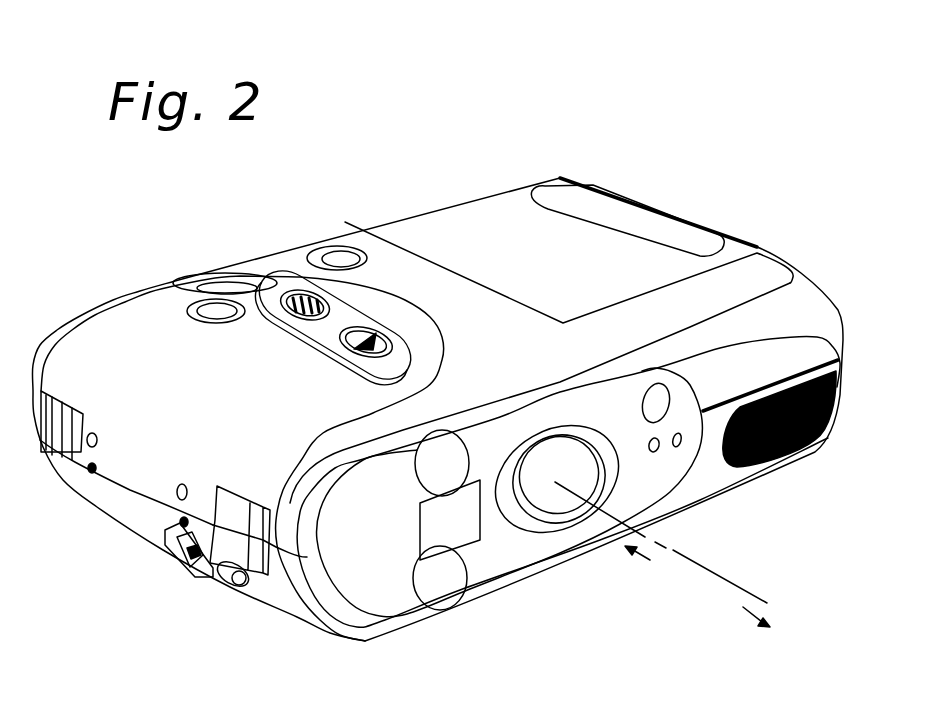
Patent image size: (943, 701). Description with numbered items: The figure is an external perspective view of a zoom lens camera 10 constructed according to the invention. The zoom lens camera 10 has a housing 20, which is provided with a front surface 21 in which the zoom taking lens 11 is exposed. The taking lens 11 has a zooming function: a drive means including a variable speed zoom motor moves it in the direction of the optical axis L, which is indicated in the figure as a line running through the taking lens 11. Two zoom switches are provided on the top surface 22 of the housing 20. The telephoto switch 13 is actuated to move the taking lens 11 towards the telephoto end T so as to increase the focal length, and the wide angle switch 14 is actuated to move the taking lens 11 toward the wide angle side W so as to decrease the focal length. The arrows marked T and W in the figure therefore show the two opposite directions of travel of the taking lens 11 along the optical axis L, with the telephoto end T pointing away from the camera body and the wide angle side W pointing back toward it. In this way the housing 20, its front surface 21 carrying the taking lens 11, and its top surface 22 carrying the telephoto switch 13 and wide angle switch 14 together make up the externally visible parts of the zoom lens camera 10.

The zoom lens camera 10 is at (736, 497).
The zoom taking lens 11 is at (553, 510).
The telephoto switch 13 is at (383, 337).
The wide angle switch 14 is at (293, 297).
The housing 20 is at (807, 300).
The front surface 21 is at (520, 563).
The top surface 22 is at (470, 313).
The wide angle side W is at (634, 568).
The optical axis L is at (700, 567).
The telephoto end T is at (756, 632).